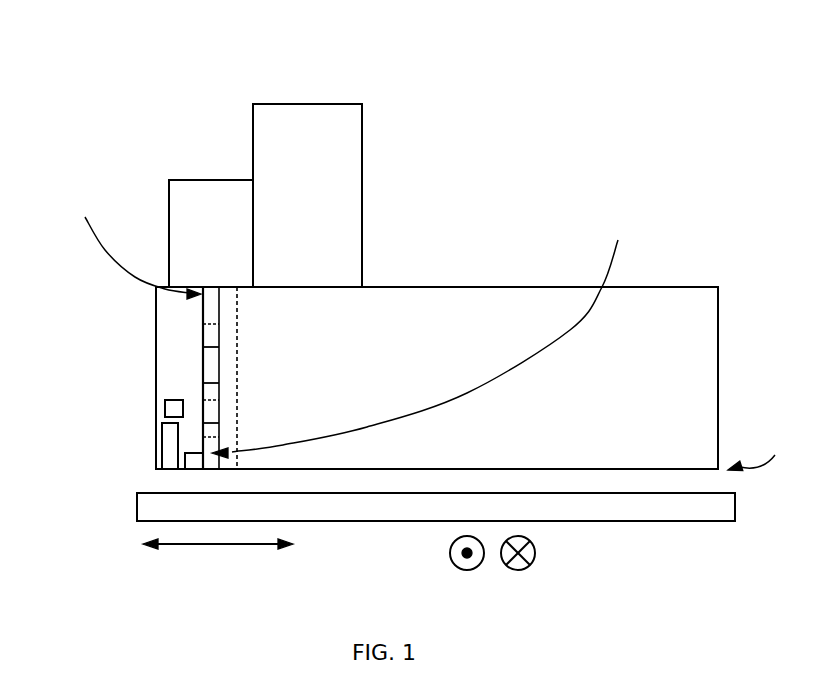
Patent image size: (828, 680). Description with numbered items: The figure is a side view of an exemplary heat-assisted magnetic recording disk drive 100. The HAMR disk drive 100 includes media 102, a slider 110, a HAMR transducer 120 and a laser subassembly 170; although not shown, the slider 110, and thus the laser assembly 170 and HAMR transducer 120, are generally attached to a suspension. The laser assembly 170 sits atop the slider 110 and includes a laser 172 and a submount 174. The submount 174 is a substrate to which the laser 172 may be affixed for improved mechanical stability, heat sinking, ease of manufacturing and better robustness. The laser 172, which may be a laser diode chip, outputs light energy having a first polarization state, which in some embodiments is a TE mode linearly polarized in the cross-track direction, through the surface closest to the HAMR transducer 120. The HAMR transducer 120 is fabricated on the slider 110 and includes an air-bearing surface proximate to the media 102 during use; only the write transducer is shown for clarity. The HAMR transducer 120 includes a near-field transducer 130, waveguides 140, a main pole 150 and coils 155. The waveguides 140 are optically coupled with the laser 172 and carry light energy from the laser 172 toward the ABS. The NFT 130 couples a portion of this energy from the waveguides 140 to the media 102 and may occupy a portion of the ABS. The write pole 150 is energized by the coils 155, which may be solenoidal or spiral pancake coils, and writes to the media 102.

The HAMR disk drive 100 is at (363, 69).
The media 102 is at (137, 510).
The slider 110 is at (718, 347).
The HAMR transducer 120 is at (237, 332).
The near-field transducer 130 is at (195, 470).
The waveguides 140 is at (172, 353).
The main pole 150 is at (157, 460).
The coils 155 is at (167, 400).
The laser subassembly 170 is at (337, 195).
The laser 172 is at (238, 180).
The submount 174 is at (362, 208).